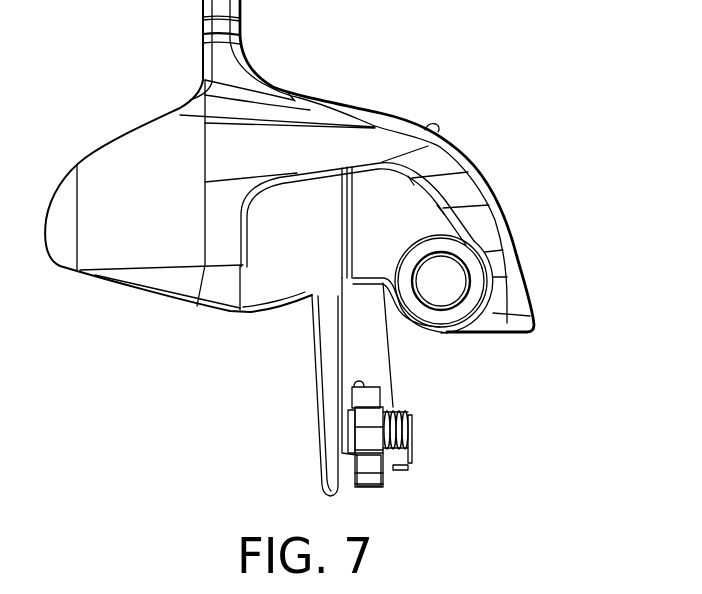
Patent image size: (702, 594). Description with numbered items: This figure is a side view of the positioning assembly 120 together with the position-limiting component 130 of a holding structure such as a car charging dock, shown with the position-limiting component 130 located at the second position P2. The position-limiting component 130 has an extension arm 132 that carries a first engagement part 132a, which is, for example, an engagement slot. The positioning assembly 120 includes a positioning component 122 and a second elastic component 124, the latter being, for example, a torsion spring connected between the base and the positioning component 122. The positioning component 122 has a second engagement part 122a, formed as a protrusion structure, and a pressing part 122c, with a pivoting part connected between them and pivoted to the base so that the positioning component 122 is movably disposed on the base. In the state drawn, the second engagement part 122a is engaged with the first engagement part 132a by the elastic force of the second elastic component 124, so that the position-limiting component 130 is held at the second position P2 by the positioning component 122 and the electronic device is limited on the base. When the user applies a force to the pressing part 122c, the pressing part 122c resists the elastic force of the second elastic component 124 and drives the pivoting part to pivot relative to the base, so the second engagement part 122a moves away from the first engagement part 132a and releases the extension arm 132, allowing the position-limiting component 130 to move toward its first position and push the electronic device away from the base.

The position-limiting component 130 is at (133, 147).
The second position P2 is at (78, 99).
The extension arm 132 is at (328, 374).
The first engagement part 132a is at (364, 369).
The positioning assembly 120 is at (455, 458).
The positioning component 122 is at (420, 450).
The second engagement part 122a is at (370, 397).
The pressing part 122c is at (372, 475).
The second elastic component 124 is at (407, 420).